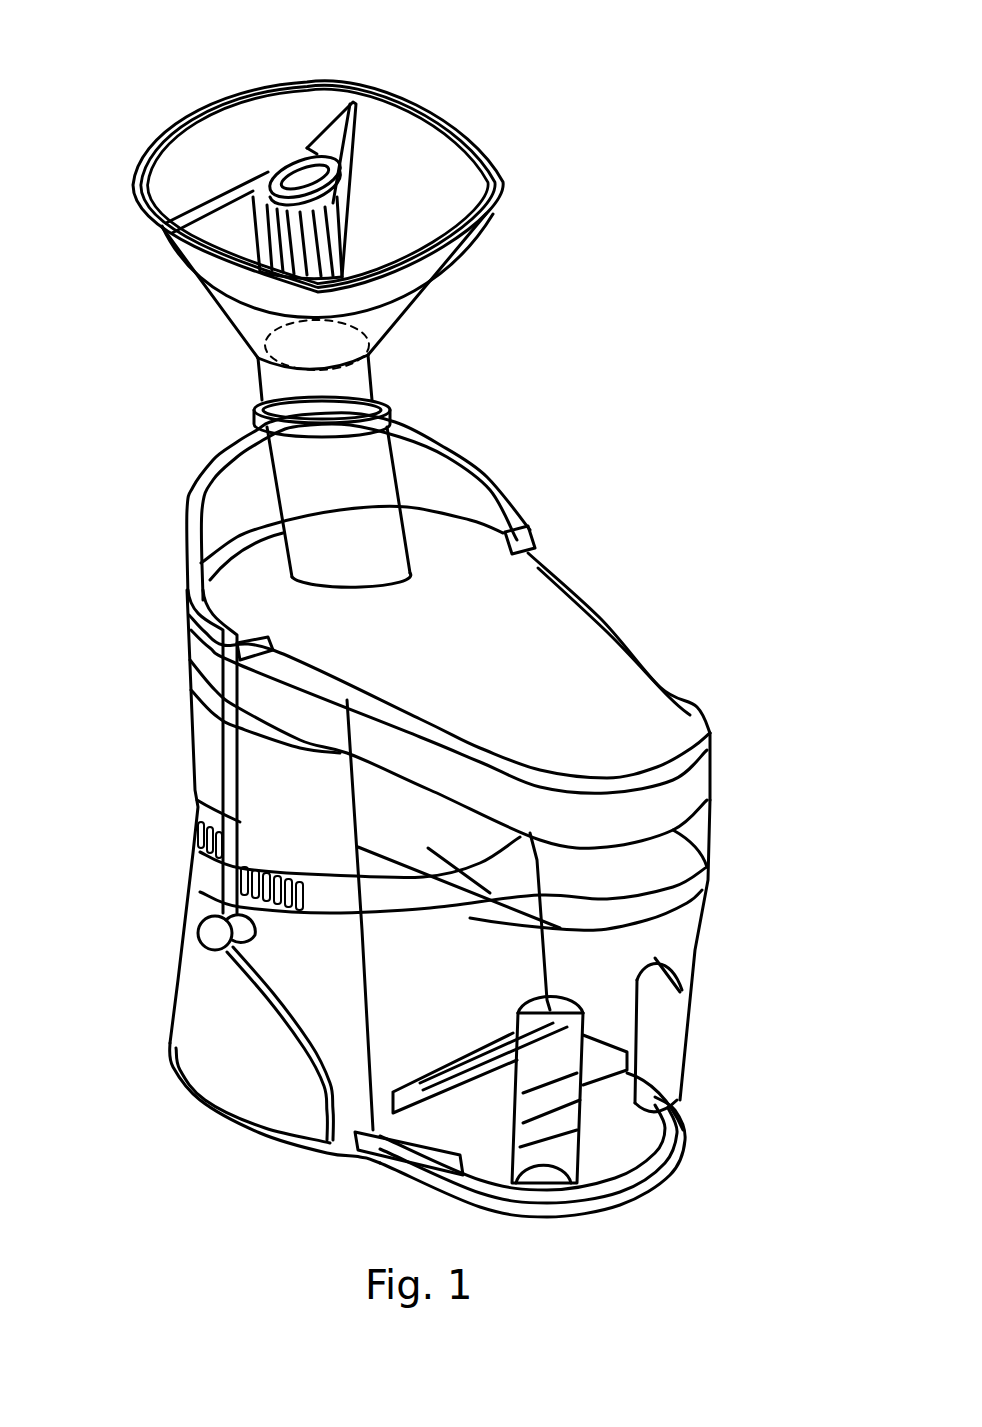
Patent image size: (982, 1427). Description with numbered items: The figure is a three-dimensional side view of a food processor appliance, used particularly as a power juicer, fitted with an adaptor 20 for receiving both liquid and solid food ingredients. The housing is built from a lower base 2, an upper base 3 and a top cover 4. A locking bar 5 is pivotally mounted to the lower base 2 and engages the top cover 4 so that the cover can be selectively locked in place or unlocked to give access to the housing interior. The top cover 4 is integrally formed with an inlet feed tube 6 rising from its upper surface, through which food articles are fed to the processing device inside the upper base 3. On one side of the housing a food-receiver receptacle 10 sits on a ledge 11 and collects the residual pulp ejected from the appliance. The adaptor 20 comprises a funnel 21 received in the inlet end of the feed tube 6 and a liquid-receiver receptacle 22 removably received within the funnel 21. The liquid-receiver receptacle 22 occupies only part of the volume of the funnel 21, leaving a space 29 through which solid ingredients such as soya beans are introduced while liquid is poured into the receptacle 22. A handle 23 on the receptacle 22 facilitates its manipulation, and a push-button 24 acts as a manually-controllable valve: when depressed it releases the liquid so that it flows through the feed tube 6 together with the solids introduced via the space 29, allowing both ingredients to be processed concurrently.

The lower base 2 is at (183, 973).
The upper base 3 is at (203, 743).
The top cover 4 is at (195, 652).
The locking bar 5 is at (203, 483).
The inlet feed tube 6 is at (383, 459).
The food-receiver receptacle 10 is at (680, 930).
The ledge 11 is at (660, 1190).
The adaptor 20 is at (535, 132).
The funnel 21 is at (185, 261).
The liquid-receiver receptacle 22 is at (437, 215).
The handle 23 is at (327, 214).
The push-button 24 is at (306, 172).
The space 29 is at (217, 140).